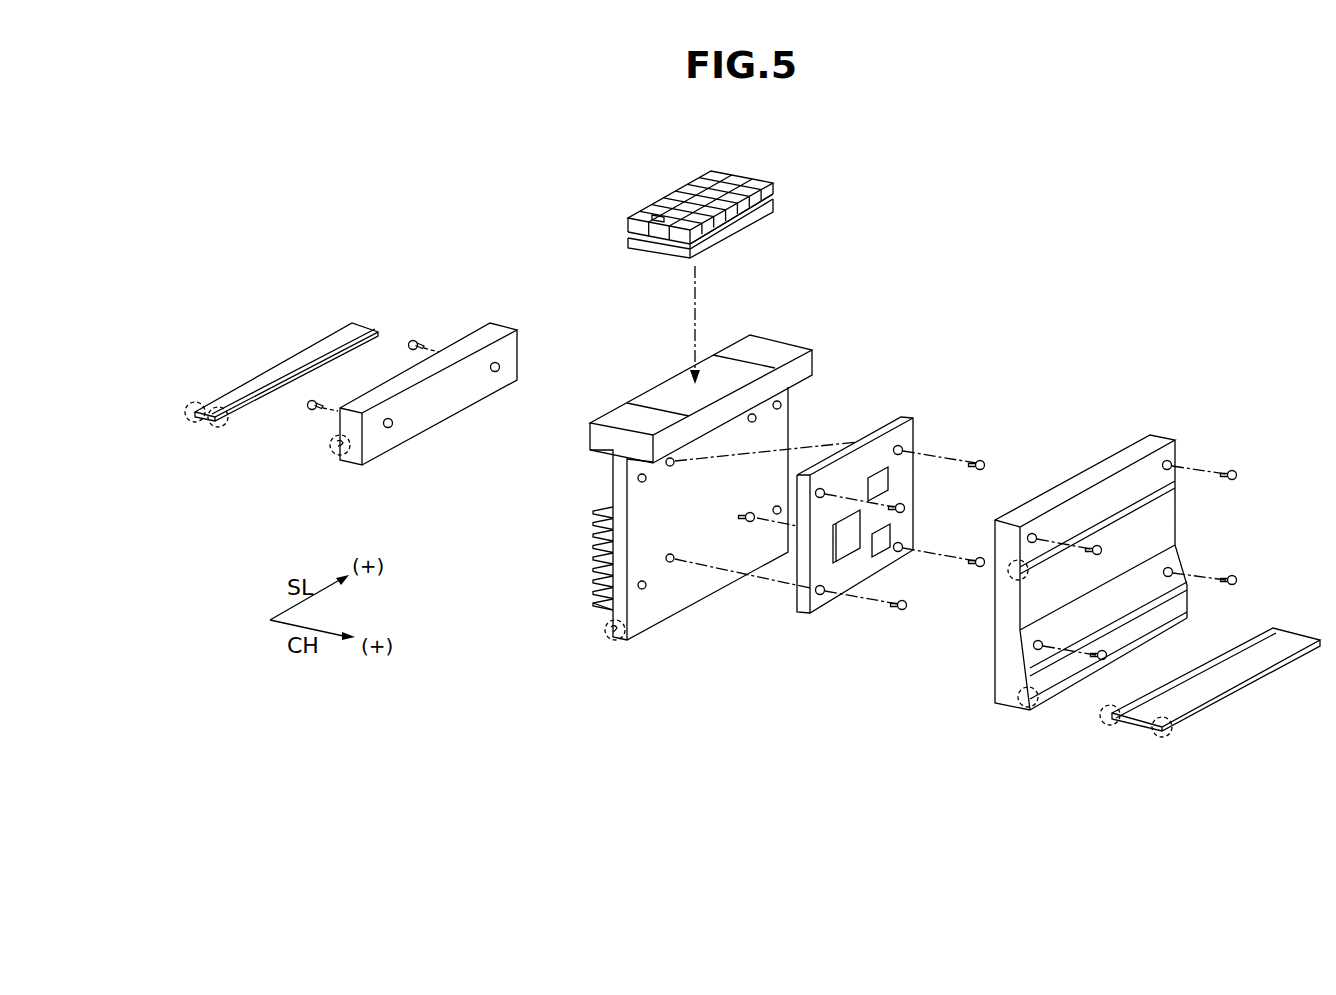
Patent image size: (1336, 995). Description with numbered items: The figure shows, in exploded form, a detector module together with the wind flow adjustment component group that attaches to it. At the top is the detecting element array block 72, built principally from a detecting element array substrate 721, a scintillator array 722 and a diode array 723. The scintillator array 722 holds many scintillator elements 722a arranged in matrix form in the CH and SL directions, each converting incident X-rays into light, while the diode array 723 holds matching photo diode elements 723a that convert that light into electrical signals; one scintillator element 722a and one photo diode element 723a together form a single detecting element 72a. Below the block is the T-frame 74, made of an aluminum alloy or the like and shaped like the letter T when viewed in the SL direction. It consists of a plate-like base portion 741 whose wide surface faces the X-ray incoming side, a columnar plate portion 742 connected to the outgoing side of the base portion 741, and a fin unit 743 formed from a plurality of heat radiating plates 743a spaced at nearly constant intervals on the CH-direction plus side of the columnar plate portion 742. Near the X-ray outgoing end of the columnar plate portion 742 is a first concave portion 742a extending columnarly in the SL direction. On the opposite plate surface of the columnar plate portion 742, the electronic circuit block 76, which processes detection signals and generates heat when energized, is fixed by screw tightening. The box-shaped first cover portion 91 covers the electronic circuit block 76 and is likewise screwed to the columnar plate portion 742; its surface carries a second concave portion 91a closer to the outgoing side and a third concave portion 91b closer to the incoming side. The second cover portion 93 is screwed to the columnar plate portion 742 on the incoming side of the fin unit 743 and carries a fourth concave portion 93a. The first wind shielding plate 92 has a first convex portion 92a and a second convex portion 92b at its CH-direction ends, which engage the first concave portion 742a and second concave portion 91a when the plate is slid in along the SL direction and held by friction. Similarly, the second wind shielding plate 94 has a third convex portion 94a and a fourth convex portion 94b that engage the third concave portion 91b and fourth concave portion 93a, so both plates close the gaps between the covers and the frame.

The detecting element array block 72 is at (765, 201).
The detecting element 72a is at (656, 212).
The detecting element array substrate 721 is at (773, 204).
The scintillator array 722 is at (773, 190).
The scintillator element 722a is at (757, 193).
The diode array 723 is at (773, 196).
The photo diode element 723a is at (758, 222).
The T-frame 74 is at (662, 494).
The base portion 741 is at (592, 442).
The columnar plate portion 742 is at (614, 486).
The first concave portion 742a is at (619, 642).
The fin unit 743 is at (580, 512).
The heat radiating plate 743a is at (600, 612).
The electronic circuit block 76 is at (892, 422).
The first cover portion 91 is at (1065, 557).
The second concave portion 91a is at (1020, 703).
The third concave portion 91b is at (1008, 579).
The first wind shielding plate 92 is at (1185, 675).
The first convex portion 92a is at (1172, 737).
The second convex portion 92b is at (1100, 725).
The second cover portion 93 is at (406, 380).
The fourth concave portion 93a is at (332, 455).
The second wind shielding plate 94 is at (260, 365).
The third convex portion 94a is at (230, 425).
The fourth convex portion 94b is at (185, 422).